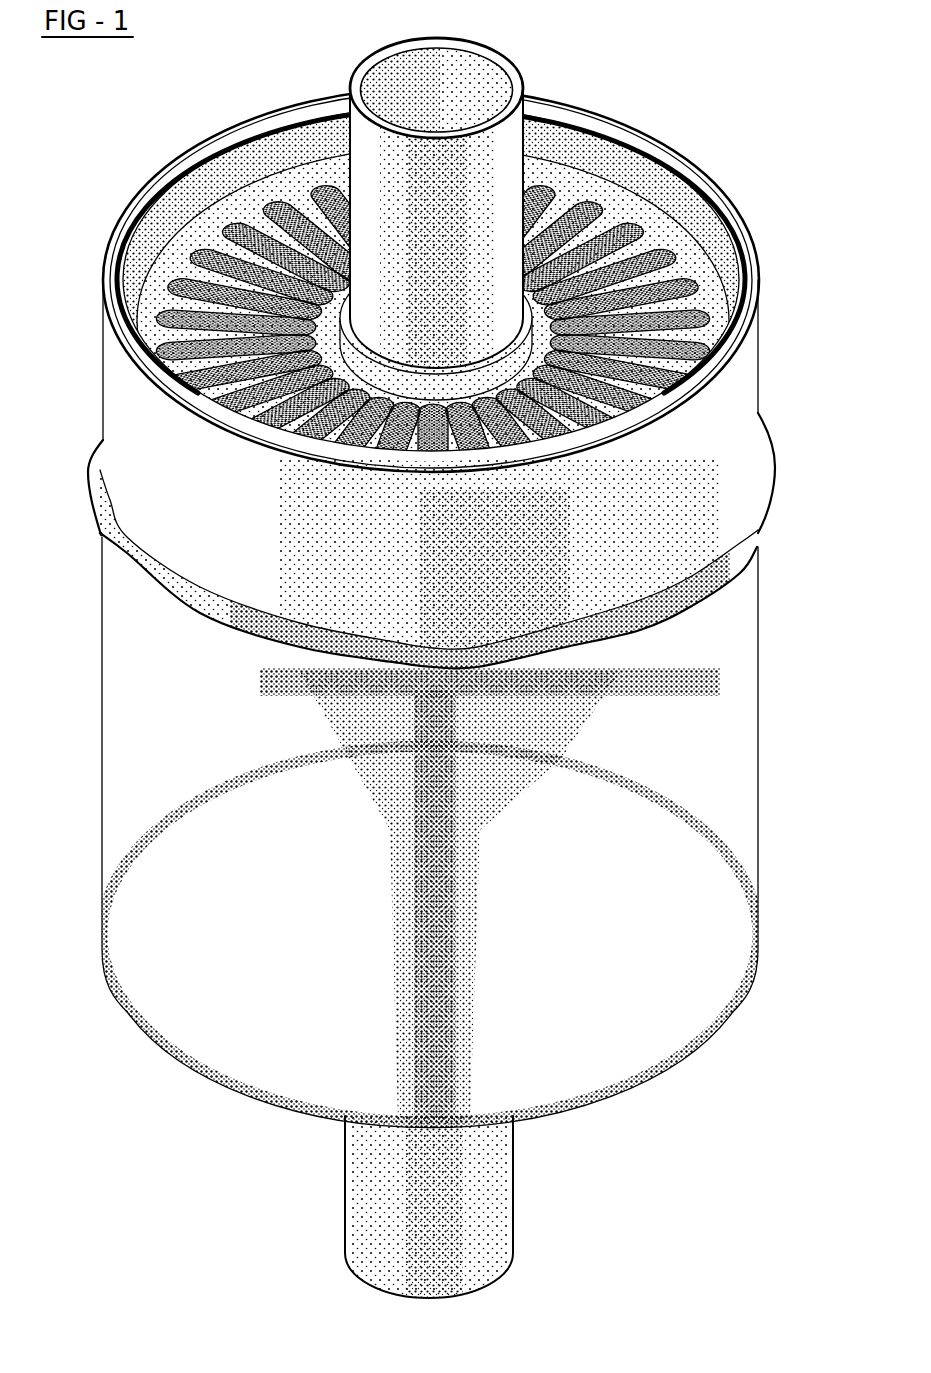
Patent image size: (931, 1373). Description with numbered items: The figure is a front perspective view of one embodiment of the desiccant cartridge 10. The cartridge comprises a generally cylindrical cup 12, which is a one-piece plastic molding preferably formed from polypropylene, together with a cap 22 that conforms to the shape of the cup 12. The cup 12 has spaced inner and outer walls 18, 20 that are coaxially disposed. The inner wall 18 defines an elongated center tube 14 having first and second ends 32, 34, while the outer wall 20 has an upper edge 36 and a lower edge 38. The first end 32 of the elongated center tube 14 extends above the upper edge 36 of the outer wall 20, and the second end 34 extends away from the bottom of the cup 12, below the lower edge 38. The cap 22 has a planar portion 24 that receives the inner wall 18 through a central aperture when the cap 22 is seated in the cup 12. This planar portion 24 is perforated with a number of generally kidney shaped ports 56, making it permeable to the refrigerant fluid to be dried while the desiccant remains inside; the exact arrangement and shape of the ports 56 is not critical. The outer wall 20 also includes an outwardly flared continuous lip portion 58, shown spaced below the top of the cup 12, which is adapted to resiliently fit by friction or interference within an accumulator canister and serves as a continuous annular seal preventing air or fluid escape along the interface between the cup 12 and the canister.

The desiccant cartridge 10 is at (436, 671).
The cup 12 is at (439, 374).
The elongated center tube 14 is at (407, 89).
The inner wall 18 is at (469, 88).
The outer wall 20 is at (409, 839).
The cap 22 is at (417, 280).
The planar portion 24 is at (431, 247).
The first end 32 is at (453, 203).
The second end 34 is at (393, 1211).
The upper edge 36 is at (410, 280).
The lower edge 38 is at (430, 944).
The kidney shaped ports 56 is at (447, 312).
The flared lip portion 58 is at (416, 524).